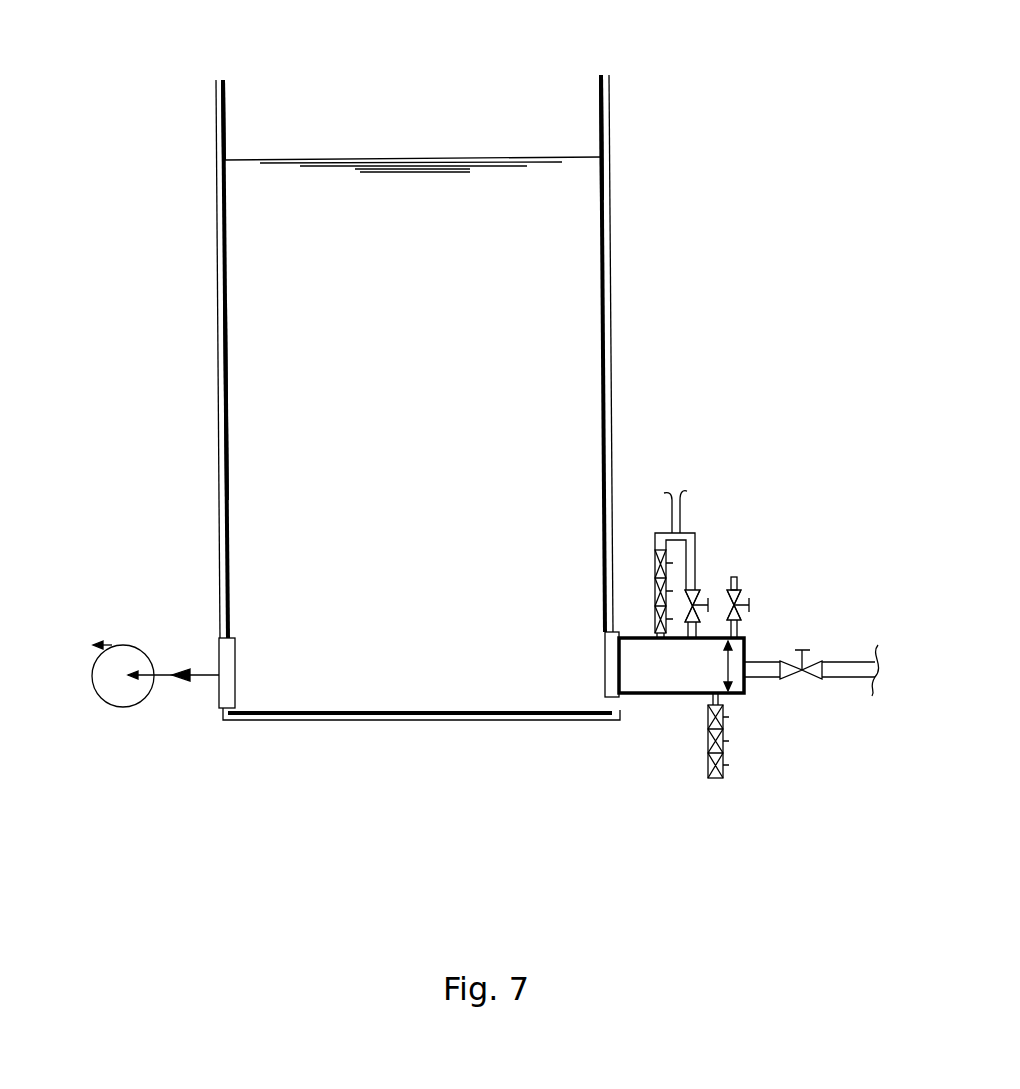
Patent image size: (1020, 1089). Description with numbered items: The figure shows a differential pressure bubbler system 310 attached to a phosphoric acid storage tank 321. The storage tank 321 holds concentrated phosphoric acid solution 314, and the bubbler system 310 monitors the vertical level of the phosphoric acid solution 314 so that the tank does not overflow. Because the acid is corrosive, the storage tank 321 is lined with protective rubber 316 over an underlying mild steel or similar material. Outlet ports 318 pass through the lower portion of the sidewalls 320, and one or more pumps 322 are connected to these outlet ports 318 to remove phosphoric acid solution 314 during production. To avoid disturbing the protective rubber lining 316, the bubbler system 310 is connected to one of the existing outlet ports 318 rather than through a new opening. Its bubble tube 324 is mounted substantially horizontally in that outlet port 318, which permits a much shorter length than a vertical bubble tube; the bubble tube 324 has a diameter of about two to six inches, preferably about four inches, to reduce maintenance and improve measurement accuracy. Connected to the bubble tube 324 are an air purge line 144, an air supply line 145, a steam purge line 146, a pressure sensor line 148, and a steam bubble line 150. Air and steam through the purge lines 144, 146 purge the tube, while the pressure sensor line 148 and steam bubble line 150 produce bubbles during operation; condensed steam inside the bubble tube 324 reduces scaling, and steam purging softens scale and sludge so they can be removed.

The differential pressure bubbler system 310 is at (795, 456).
The phosphoric acid solution 314 is at (568, 350).
The protective rubber lining 316 is at (223, 127).
The outlet ports 318 is at (218, 708).
The sidewalls 320 is at (225, 449).
The phosphoric acid storage tank 321 is at (606, 123).
The pumps 322 is at (122, 643).
The bubble tube 324 is at (655, 698).
The air purge line 144 is at (710, 535).
The air supply line 145 is at (650, 556).
The steam purge line 146 is at (811, 688).
The pressure sensor line 148 is at (757, 585).
The steam bubble line 150 is at (753, 797).